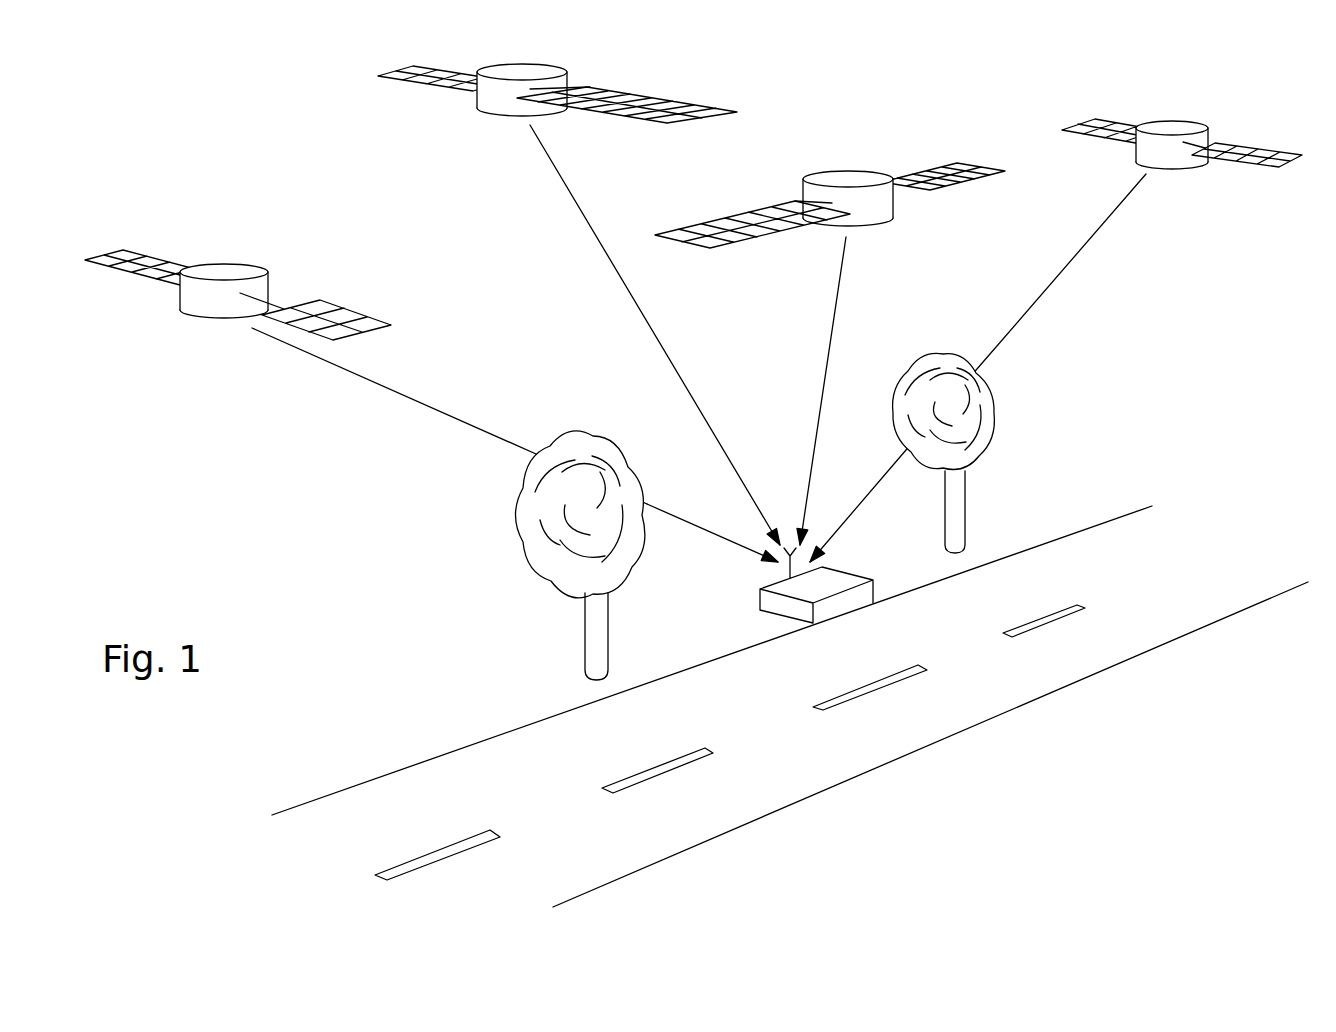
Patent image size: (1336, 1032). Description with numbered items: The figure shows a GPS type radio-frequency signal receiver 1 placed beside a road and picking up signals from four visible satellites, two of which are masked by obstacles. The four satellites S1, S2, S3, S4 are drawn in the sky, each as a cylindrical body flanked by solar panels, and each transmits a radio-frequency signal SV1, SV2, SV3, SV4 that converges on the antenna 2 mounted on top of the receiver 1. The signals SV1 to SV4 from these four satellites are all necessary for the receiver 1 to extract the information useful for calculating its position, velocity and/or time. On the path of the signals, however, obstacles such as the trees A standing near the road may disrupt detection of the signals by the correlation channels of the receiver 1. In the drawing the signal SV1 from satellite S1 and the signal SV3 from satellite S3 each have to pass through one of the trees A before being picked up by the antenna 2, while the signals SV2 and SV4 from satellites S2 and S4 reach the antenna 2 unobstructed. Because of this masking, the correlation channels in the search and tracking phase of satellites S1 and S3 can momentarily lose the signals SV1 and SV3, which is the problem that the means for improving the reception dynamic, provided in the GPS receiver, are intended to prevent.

The GPS receiver 1 is at (833, 580).
The antenna 2 is at (790, 571).
The trees A is at (540, 530).
The satellite S1 is at (238, 285).
The satellite S2 is at (830, 193).
The satellite S3 is at (1182, 129).
The satellite S4 is at (557, 78).
The radio-frequency signal SV1 is at (515, 445).
The radio-frequency signal SV2 is at (847, 391).
The radio-frequency signal SV3 is at (978, 368).
The radio-frequency signal SV4 is at (655, 335).